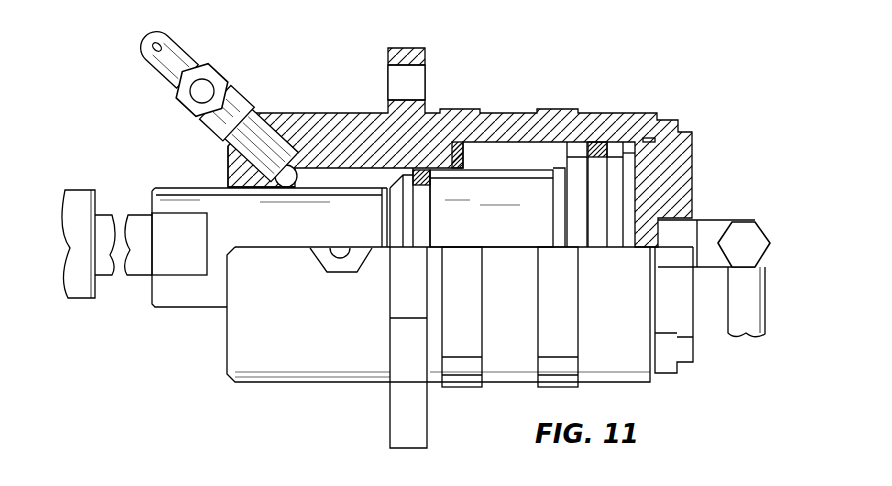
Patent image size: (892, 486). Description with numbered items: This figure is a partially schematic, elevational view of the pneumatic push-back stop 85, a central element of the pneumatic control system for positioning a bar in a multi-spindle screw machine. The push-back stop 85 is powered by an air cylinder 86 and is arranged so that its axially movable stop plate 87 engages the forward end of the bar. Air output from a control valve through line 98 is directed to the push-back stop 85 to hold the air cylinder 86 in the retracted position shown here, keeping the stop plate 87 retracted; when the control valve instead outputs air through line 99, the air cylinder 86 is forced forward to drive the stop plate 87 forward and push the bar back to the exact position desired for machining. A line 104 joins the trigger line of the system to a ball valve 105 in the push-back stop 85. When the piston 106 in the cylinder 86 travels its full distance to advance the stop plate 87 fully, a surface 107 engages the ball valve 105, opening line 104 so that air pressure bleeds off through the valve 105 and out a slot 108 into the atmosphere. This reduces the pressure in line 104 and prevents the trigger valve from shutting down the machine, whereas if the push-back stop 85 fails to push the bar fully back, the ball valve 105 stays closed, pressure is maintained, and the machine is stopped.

The push-back stop 85 is at (372, 78).
The air cylinder 86 is at (500, 148).
The stop plate 87 is at (78, 193).
The line 98 is at (327, 265).
The line 99 is at (748, 290).
The line 104 is at (182, 60).
The ball valve 105 is at (290, 187).
The piston 106 is at (536, 224).
The surface 107 is at (395, 170).
The slot 108 is at (246, 189).